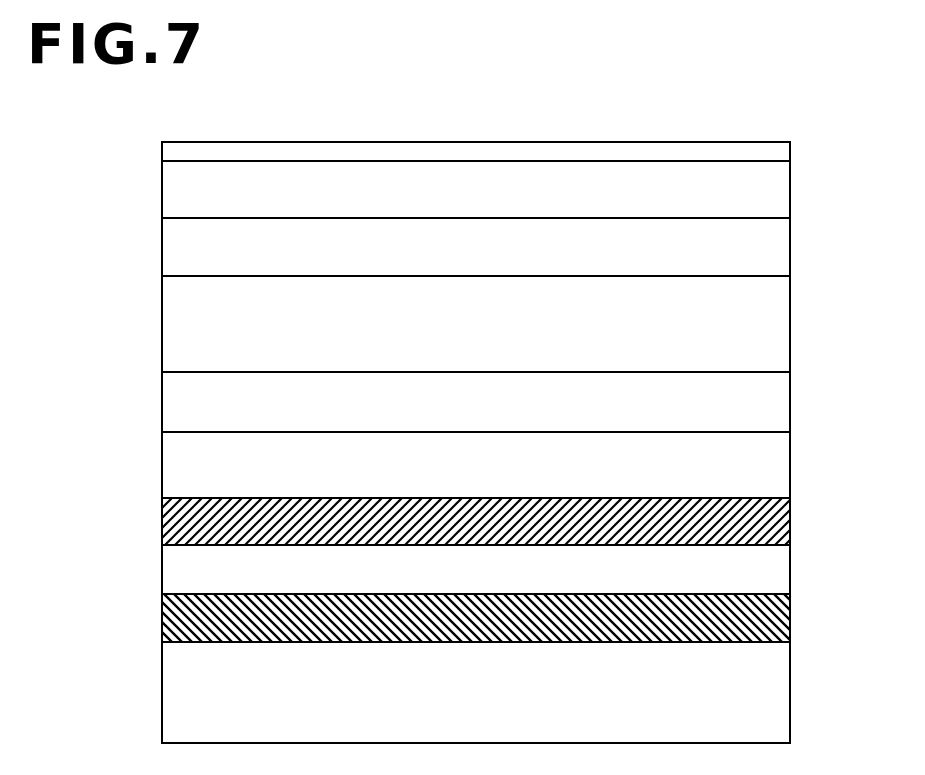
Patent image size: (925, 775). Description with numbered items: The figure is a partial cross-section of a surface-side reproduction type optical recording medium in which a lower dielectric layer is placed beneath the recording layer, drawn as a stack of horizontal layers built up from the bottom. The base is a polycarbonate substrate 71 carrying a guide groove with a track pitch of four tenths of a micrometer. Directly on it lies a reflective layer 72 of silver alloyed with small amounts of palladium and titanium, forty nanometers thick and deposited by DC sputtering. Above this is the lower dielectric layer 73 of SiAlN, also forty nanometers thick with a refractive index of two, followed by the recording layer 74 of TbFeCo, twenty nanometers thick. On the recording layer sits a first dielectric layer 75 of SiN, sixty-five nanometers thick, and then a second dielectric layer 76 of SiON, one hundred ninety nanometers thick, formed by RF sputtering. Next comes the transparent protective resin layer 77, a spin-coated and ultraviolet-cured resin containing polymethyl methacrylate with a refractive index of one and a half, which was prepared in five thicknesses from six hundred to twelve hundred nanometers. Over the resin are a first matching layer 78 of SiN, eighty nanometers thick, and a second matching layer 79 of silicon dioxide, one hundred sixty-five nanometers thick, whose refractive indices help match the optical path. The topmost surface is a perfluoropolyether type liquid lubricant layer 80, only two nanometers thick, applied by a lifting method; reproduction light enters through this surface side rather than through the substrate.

The substrate 71 is at (790, 681).
The reflective layer 72 is at (790, 618).
The lower dielectric layer 73 is at (790, 567).
The recording layer 74 is at (790, 513).
The first dielectric layer 75 is at (790, 463).
The second dielectric layer 76 is at (790, 402).
The transparent protective resin layer 77 is at (790, 318).
The first matching layer 78 is at (790, 247).
The second matching layer 79 is at (790, 191).
The liquid lubricant layer 80 is at (790, 147).